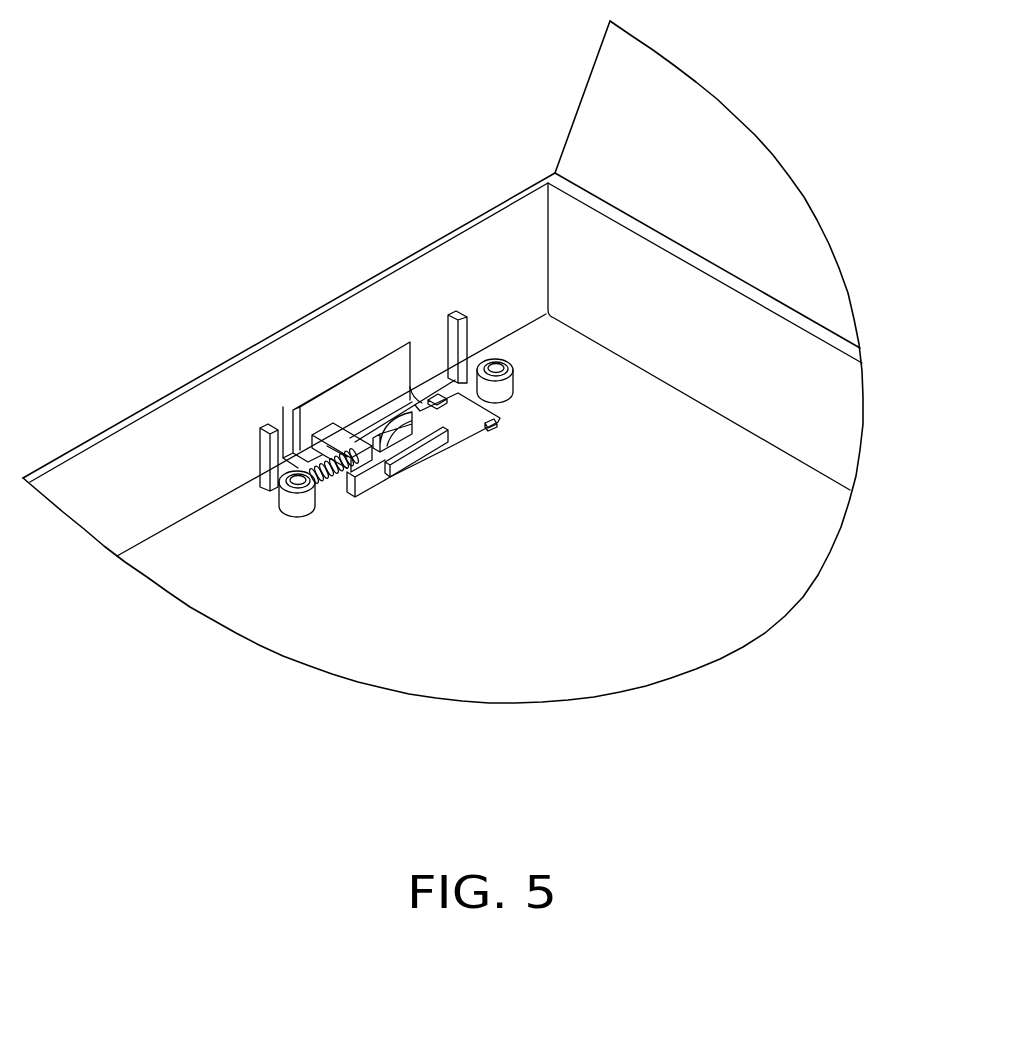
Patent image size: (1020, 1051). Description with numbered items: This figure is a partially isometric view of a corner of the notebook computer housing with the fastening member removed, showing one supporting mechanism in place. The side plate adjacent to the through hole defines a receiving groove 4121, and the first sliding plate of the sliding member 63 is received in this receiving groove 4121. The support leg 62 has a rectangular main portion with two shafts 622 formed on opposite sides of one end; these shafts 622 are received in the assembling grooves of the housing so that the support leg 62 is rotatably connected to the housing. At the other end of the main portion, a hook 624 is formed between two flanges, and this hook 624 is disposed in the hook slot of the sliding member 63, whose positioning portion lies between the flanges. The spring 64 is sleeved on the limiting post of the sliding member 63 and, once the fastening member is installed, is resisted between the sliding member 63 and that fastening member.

The receiving groove 4121 is at (282, 418).
The support leg 62 is at (460, 418).
The shafts 622 is at (497, 422).
The hook 624 is at (413, 425).
The sliding member 63 is at (363, 478).
The spring 64 is at (322, 488).